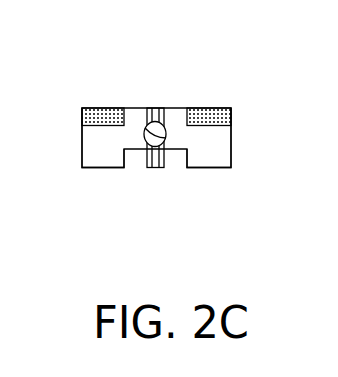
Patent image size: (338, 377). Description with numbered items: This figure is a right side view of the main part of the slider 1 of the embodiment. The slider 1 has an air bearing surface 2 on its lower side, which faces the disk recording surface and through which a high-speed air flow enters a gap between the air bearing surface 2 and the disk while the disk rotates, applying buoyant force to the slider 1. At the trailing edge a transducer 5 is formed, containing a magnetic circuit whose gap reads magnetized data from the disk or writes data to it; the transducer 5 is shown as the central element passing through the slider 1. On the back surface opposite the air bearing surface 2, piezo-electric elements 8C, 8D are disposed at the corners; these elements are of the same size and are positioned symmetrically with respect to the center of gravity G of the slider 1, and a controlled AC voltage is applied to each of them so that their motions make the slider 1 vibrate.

The slider 1 is at (143, 102).
The air bearing surface 2 is at (108, 168).
The transducer 5 is at (156, 168).
The piezo-electric element 8C is at (212, 107).
The piezo-electric element 8D is at (100, 107).
The center of gravity G is at (164, 124).